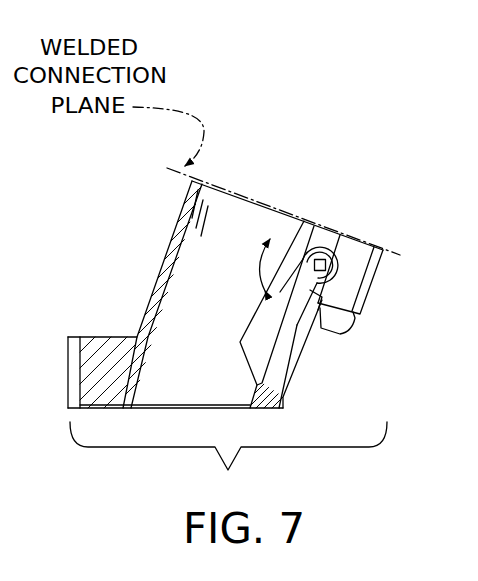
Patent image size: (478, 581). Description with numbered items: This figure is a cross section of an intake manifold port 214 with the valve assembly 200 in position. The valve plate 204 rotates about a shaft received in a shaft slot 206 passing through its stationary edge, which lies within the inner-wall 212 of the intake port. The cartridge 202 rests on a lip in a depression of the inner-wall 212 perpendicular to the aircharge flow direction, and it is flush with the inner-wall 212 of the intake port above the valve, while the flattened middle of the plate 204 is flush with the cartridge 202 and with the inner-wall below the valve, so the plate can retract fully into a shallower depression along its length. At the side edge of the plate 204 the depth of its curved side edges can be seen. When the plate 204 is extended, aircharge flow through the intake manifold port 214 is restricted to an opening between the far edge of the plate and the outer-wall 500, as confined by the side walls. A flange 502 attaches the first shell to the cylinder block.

The assembly body 200 is at (339, 204).
The cartridge 202 is at (347, 233).
The valve plate 204 is at (247, 330).
The shaft slot 206 is at (340, 277).
The inner-wall 212 is at (304, 357).
The intake manifold port 214 is at (227, 451).
The outer-wall 500 is at (142, 264).
The flange 502 is at (92, 330).